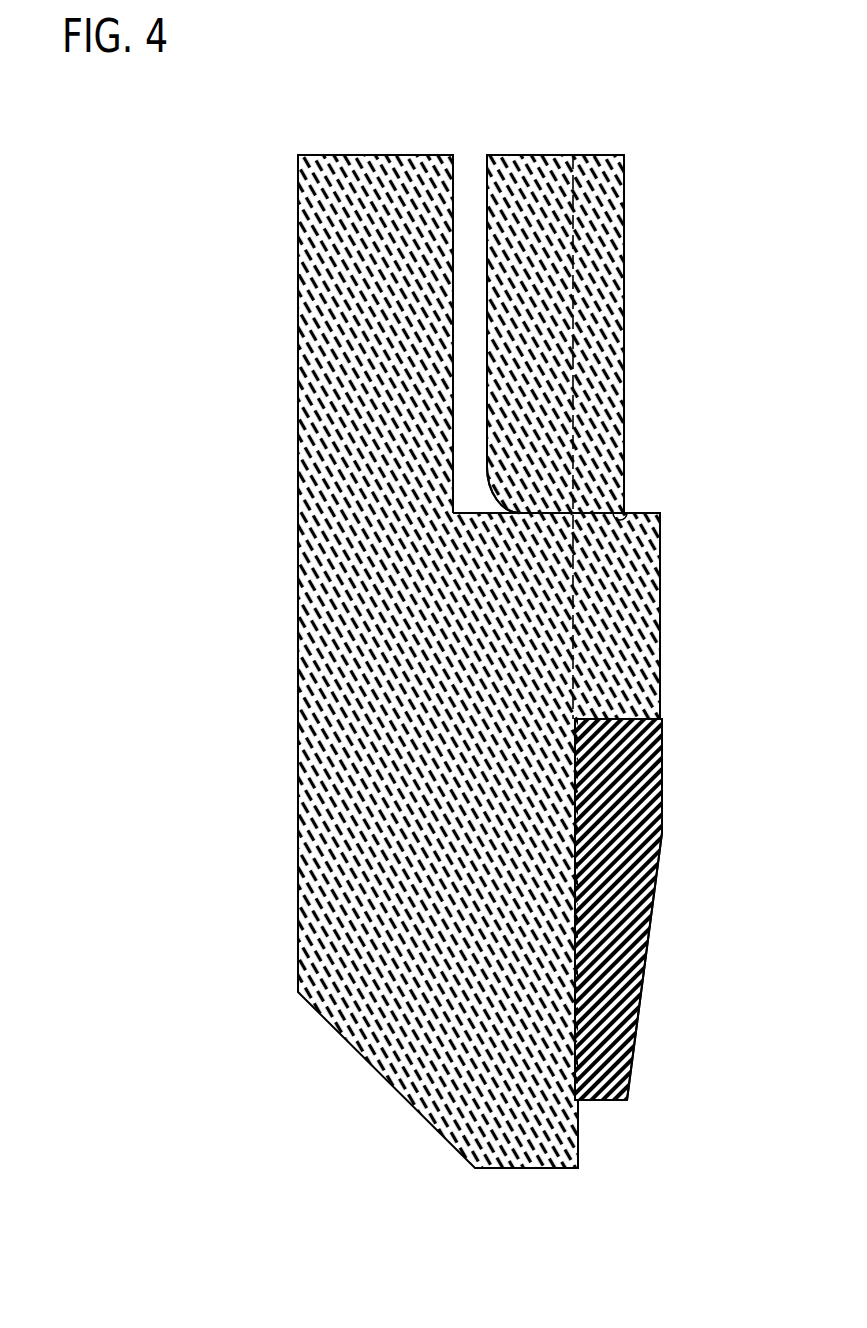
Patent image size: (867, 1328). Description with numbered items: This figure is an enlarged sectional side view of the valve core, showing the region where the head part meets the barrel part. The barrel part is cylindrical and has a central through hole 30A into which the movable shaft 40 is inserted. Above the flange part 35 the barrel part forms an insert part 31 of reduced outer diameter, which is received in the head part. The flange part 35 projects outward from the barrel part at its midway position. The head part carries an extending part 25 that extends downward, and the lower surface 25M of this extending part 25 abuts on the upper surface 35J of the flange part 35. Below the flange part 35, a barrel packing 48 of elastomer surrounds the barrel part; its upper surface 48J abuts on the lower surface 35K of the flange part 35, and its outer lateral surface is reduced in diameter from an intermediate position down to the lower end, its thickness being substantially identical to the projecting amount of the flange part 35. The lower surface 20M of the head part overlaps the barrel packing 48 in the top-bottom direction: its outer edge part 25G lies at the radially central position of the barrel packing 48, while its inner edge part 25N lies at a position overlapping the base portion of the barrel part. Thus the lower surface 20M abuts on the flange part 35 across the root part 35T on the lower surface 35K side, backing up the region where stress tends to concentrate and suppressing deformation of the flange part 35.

The through hole 30A is at (298, 250).
The insert part 31 is at (318, 333).
The extending part 25 is at (613, 299).
The outer edge part 25G is at (624, 259).
The lower surface of the extending part 25M is at (577, 523).
The inner edge part 25N is at (487, 443).
The movable shaft 40 is at (567, 214).
The lower surface of the head part 20M is at (630, 513).
The flange part 35 is at (638, 612).
The upper surface of the flange part 35J is at (647, 513).
The root part 35T is at (577, 717).
The lower surface of the flange part 35K is at (648, 727).
The barrel packing 48 is at (652, 927).
The upper surface of the barrel packing 48J is at (662, 755).